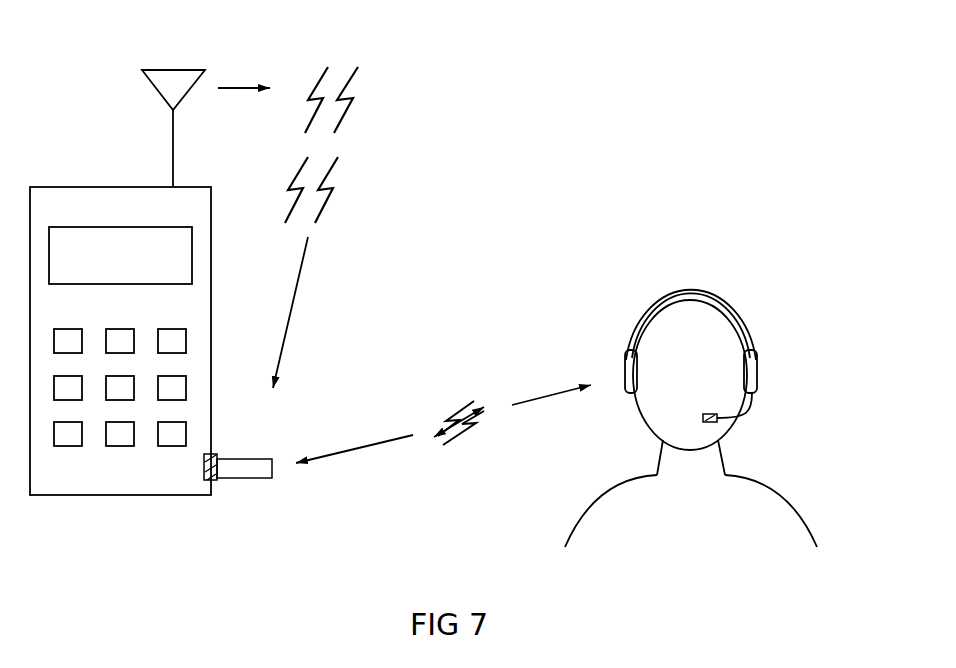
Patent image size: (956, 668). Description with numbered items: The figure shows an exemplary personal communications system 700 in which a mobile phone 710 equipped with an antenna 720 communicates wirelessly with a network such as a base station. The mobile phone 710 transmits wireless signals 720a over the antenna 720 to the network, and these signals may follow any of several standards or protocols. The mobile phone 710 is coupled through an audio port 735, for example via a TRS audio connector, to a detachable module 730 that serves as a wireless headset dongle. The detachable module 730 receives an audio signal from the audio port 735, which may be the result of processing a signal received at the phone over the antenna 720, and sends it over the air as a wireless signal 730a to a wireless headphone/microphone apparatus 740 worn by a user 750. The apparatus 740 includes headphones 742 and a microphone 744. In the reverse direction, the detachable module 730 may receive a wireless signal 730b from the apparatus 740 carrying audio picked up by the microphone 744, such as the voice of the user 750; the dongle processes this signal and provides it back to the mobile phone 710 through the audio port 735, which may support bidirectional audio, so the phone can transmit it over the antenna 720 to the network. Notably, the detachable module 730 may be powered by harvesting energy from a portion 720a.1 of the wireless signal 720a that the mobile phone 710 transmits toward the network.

The personal communications system 700 is at (625, 39).
The mobile phone 710 is at (82, 187).
The antenna 720 is at (174, 69).
The wireless signals 720a is at (320, 145).
The portion of the wireless signal 720a.1 is at (295, 302).
The detachable module 730 is at (245, 458).
The audio port 735 is at (234, 487).
The wireless signal 730a is at (467, 441).
The wireless signal 730b is at (453, 401).
The wireless headphone/microphone apparatus 740 is at (690, 285).
The headphones 742 is at (757, 361).
The microphone 744 is at (713, 422).
The user 750 is at (792, 510).